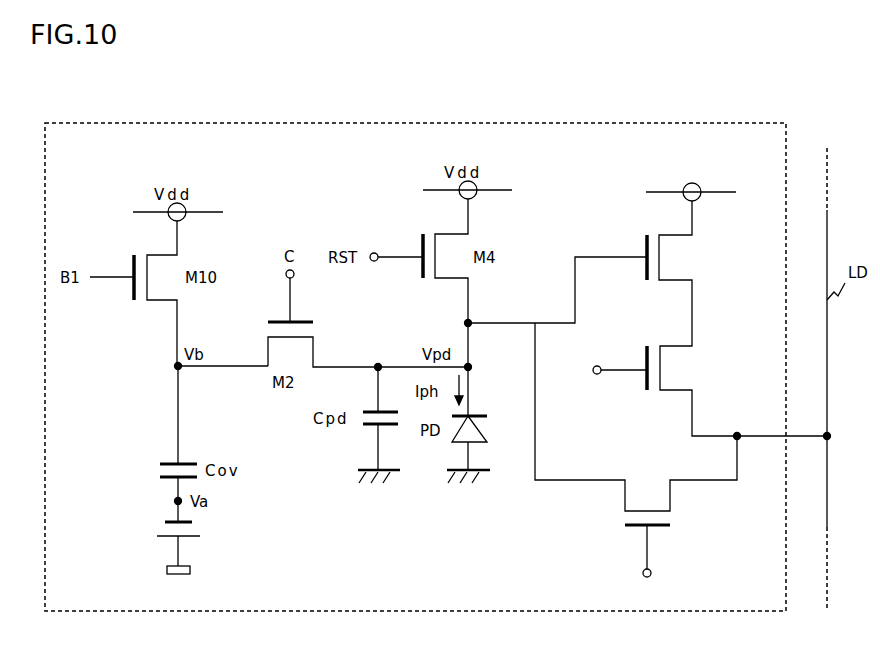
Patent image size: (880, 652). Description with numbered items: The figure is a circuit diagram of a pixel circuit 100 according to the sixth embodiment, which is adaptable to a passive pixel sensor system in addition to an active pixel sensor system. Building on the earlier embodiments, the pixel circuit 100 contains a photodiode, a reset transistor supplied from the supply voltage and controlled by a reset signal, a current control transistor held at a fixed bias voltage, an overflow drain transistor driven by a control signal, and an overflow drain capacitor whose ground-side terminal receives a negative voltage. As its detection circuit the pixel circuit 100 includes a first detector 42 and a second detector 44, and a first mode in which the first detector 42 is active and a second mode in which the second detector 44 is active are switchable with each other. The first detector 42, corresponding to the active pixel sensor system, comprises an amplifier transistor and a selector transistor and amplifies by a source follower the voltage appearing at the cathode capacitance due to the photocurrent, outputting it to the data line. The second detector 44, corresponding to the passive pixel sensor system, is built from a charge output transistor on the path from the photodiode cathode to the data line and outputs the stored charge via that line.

The pixel circuit 100 is at (623, 123).
The first detector 42 is at (738, 253).
The second detector 44 is at (636, 463).